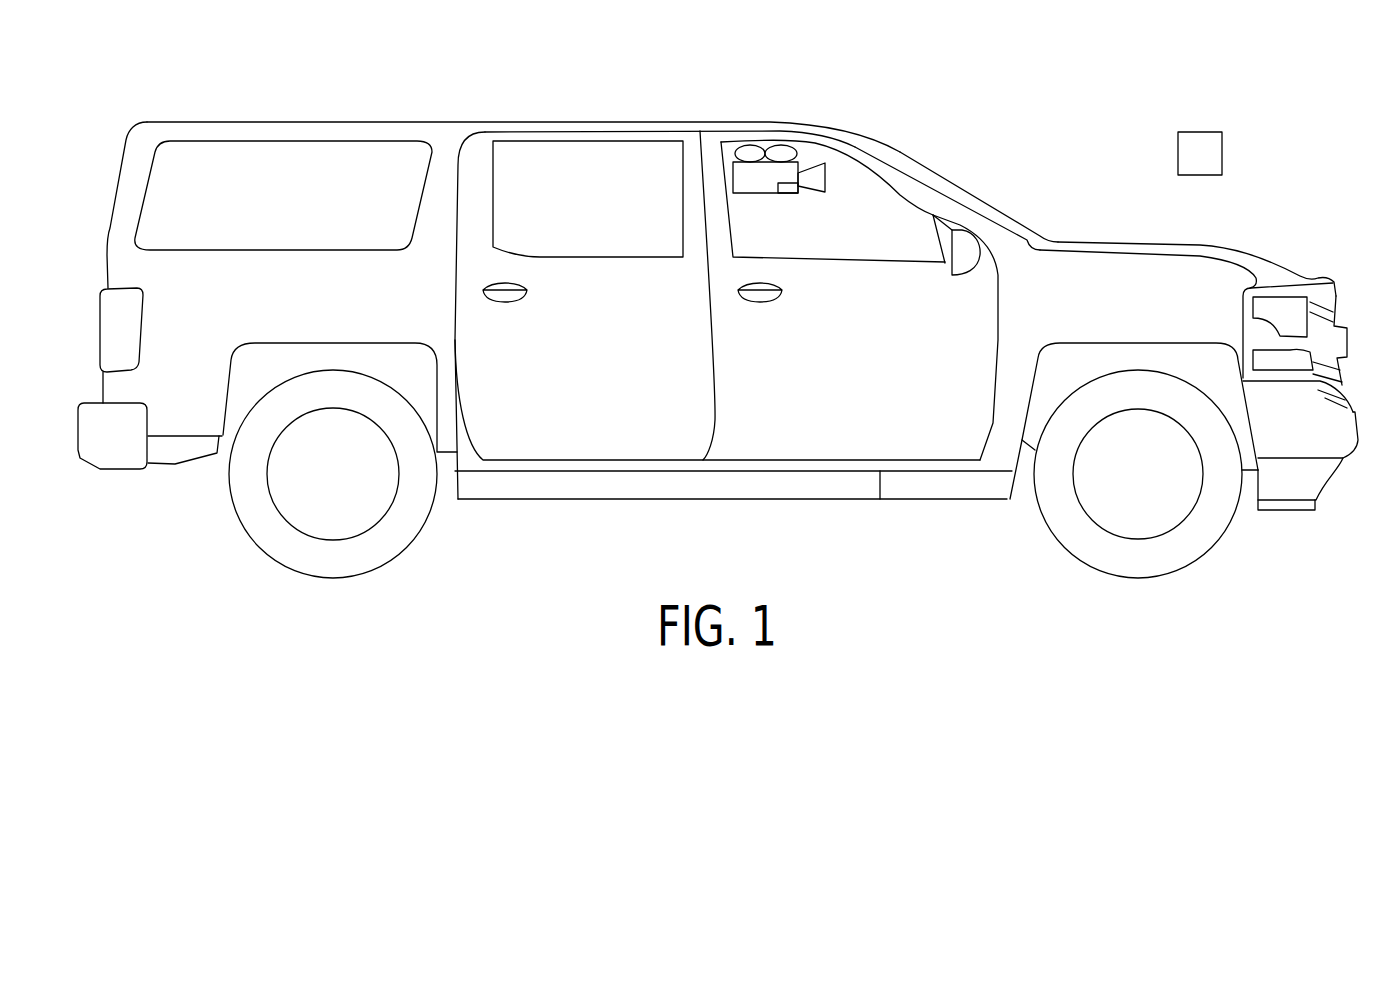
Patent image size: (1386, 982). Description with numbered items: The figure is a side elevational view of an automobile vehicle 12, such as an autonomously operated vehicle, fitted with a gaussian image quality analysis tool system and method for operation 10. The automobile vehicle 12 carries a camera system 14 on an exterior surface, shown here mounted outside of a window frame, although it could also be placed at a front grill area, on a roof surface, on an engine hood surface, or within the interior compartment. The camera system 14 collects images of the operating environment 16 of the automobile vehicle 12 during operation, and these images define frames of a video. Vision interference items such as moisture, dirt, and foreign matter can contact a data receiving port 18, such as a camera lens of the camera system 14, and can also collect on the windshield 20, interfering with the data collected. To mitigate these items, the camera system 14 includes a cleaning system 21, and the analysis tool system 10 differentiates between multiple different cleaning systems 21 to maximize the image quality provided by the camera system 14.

The gaussian image quality analysis tool system and method for operation 10 is at (718, 298).
The automobile vehicle 12 is at (1128, 275).
The camera system 14 is at (765, 178).
The operating environment 16 is at (1188, 167).
The data receiving port 18 is at (826, 177).
The windshield 20 is at (983, 197).
The cleaning system 21 is at (788, 190).